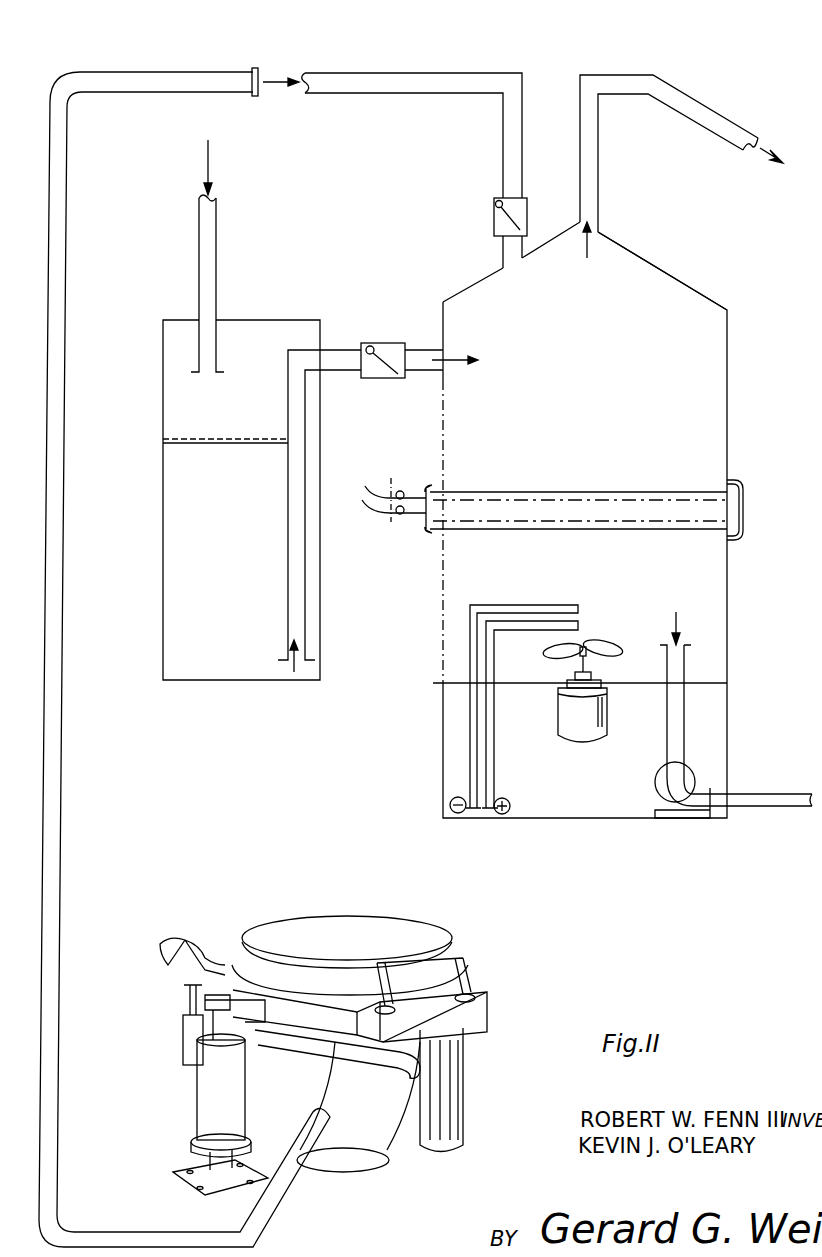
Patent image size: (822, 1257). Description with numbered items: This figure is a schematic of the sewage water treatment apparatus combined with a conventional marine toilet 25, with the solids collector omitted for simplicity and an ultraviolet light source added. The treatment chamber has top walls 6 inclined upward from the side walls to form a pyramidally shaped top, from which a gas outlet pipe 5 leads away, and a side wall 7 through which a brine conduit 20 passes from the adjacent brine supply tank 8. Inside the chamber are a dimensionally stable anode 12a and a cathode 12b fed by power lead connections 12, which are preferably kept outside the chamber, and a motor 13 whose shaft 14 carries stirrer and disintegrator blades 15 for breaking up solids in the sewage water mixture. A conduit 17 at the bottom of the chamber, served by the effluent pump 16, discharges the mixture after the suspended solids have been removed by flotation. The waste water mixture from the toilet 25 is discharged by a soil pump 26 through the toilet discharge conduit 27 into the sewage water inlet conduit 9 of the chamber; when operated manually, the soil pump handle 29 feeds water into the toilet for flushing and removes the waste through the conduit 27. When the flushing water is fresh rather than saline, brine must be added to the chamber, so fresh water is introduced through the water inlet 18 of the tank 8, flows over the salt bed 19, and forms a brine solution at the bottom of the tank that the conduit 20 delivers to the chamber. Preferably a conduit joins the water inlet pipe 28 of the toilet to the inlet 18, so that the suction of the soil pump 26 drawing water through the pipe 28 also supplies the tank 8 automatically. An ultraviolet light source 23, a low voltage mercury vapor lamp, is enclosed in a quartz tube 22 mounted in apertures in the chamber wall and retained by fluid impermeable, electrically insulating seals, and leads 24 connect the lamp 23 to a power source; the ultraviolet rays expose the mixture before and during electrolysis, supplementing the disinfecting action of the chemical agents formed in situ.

The exhaust gas outlet pipe 5 is at (620, 73).
The top walls 6 is at (655, 267).
The wall of chamber 7 is at (756, 349).
The brine supply tank 8 is at (224, 697).
The sewage water inlet conduit 9 is at (380, 73).
The power lead connections 12 is at (538, 604).
The dimensionally stable anode 12a is at (507, 633).
The cathode 12b is at (500, 814).
The motor 13 is at (586, 746).
The shaft 14 is at (592, 663).
The stirrer and disintegrator blades 15 is at (617, 647).
The effluent pump 16 is at (698, 773).
The conduit 17 is at (690, 668).
The water inlet 18 is at (217, 259).
The salt bed 19 is at (175, 441).
The brine conduit 20 is at (307, 633).
The quartz tube 22 is at (512, 490).
The ultraviolet light source 23 is at (614, 497).
The leads 24 is at (392, 503).
The marine toilet 25 is at (496, 988).
The soil pump 26 is at (178, 1034).
The toilet discharge conduit 27 is at (292, 1194).
The water inlet pipe 28 is at (250, 1055).
The soil pump handle 29 is at (160, 946).